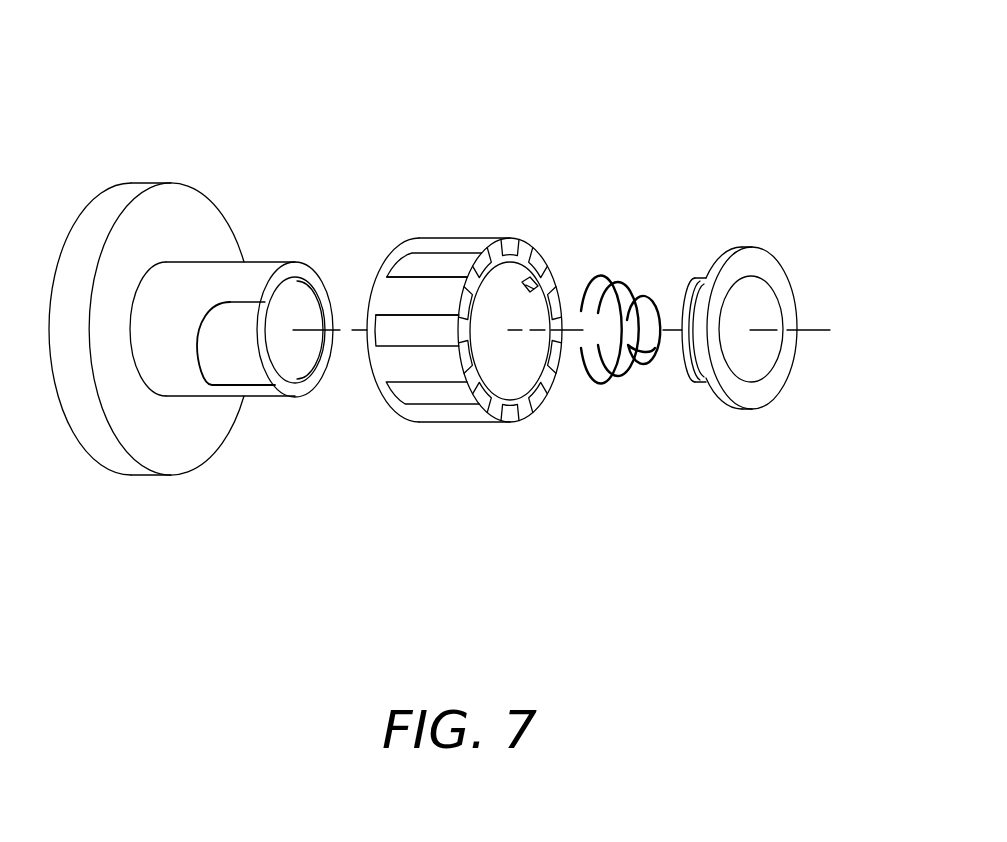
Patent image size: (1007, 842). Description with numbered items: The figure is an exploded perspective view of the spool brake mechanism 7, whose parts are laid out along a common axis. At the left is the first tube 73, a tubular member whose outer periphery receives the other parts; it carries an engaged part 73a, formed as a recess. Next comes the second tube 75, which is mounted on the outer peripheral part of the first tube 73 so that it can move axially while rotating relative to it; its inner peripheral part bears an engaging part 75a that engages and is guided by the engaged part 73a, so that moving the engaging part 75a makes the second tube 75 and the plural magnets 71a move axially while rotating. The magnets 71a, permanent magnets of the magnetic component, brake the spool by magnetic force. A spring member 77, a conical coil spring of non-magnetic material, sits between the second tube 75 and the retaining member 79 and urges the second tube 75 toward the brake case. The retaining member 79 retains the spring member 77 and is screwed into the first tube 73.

The spool brake mechanism 7 is at (701, 124).
The magnets 71a is at (432, 300).
The first tube 73 is at (152, 486).
The engaged part 73a is at (248, 367).
The second tube 75 is at (442, 451).
The engaging part 75a is at (528, 291).
The spring member 77 is at (620, 282).
The retaining member 79 is at (770, 277).